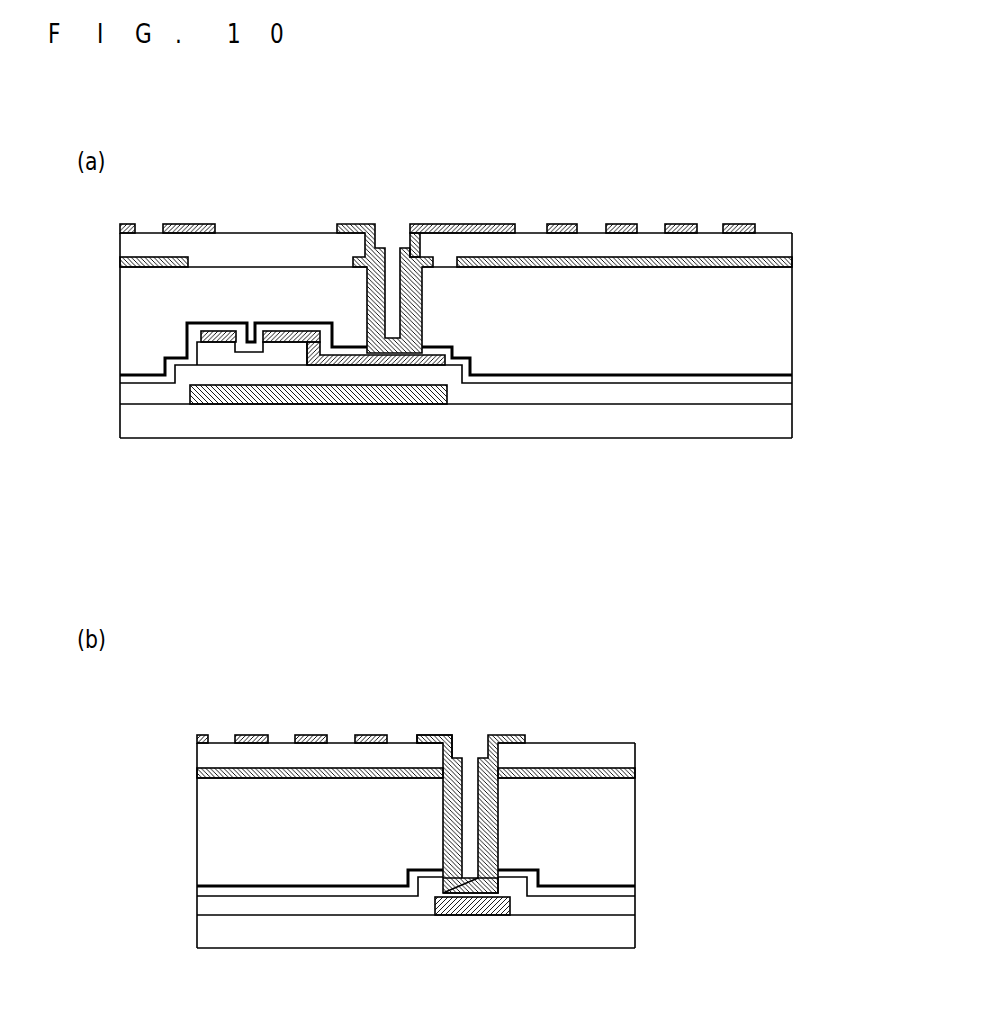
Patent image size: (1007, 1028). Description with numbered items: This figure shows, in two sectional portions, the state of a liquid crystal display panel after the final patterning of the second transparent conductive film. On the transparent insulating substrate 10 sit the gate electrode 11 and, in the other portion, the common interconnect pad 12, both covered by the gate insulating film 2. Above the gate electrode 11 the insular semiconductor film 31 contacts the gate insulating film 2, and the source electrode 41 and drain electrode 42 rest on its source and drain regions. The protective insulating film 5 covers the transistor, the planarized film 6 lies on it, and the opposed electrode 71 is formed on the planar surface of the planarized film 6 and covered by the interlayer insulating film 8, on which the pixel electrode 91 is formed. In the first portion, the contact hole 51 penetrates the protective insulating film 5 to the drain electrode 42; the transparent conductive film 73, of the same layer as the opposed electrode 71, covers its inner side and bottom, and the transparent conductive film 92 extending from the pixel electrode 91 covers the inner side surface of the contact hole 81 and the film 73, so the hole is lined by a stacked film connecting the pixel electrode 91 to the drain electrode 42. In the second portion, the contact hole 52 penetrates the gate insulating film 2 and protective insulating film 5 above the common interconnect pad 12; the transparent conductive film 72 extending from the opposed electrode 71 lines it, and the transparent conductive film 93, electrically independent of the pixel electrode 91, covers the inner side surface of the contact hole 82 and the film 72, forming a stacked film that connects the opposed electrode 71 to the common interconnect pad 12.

The transparent insulating substrate 10 is at (788, 423).
The gate insulating film 2 is at (788, 397).
The gate electrode 11 is at (290, 400).
The common interconnect pad 12 is at (475, 905).
The protective insulating film 5 is at (788, 377).
The semiconductor film 31 is at (197, 345).
The source electrode 41 is at (218, 331).
The drain electrode 42 is at (278, 331).
The contact hole 51 is at (422, 348).
The contact hole 52 is at (497, 890).
The transparent conductive film 73 is at (352, 258).
The contact hole 81 is at (423, 256).
The contact hole 82 is at (503, 763).
The transparent conductive film 92 is at (488, 224).
The transparent conductive film 93 is at (428, 735).
The interlayer insulating film 8 is at (786, 245).
The planarized film 6 is at (786, 305).
The opposed electrode 71 is at (786, 262).
The transparent conductive film 72 is at (630, 772).
The pixel electrode 91 is at (185, 224).